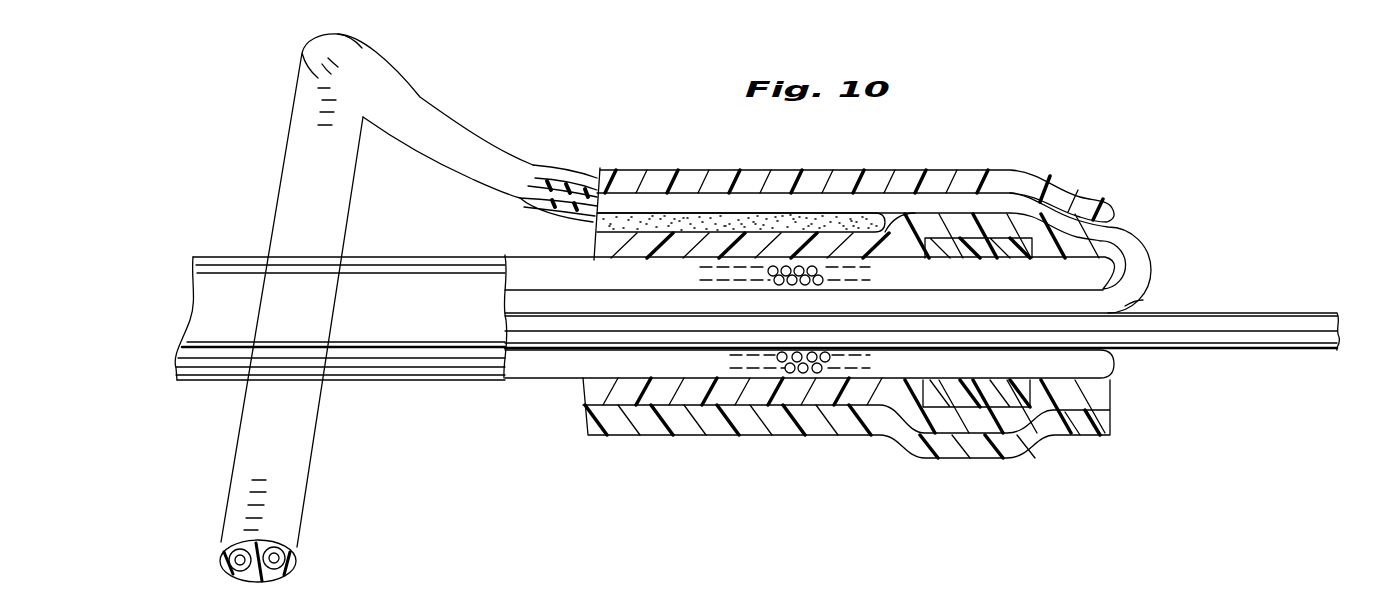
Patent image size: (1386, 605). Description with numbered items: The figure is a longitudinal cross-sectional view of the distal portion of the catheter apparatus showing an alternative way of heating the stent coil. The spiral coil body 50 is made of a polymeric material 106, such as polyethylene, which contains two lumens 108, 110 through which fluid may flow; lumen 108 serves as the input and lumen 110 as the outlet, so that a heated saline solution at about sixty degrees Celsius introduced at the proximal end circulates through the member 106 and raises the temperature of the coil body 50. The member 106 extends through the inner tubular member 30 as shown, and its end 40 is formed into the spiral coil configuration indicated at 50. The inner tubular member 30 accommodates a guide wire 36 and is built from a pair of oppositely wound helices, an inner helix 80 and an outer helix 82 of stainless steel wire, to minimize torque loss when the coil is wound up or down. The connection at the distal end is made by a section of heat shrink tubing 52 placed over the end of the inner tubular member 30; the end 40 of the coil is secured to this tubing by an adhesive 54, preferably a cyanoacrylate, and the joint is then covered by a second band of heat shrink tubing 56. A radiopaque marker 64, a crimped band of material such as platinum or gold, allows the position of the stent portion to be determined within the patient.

The inner tubular member 30 is at (443, 383).
The guide wire 36 is at (1265, 320).
The distal end of coil body 40 is at (516, 160).
The spiral coil body 50 is at (298, 89).
The heat shrink tubing 52 is at (1117, 237).
The adhesive 54 is at (803, 223).
The second band of heat shrink tubing 56 is at (1050, 176).
The radiopaque marker 64 is at (1010, 407).
The inner helix 80 is at (778, 358).
The outer helix 82 is at (786, 372).
The polymeric material 106 is at (267, 577).
The lumen 108 is at (223, 563).
The lumen 110 is at (290, 561).